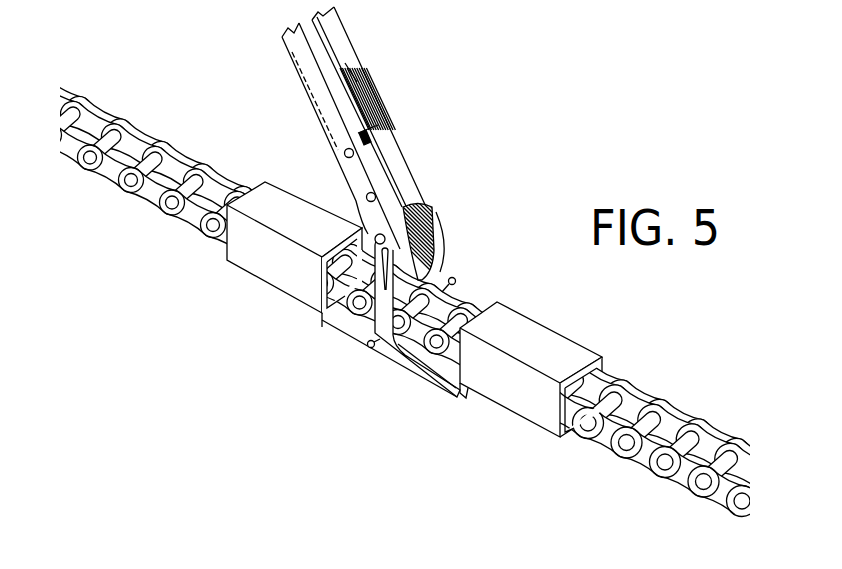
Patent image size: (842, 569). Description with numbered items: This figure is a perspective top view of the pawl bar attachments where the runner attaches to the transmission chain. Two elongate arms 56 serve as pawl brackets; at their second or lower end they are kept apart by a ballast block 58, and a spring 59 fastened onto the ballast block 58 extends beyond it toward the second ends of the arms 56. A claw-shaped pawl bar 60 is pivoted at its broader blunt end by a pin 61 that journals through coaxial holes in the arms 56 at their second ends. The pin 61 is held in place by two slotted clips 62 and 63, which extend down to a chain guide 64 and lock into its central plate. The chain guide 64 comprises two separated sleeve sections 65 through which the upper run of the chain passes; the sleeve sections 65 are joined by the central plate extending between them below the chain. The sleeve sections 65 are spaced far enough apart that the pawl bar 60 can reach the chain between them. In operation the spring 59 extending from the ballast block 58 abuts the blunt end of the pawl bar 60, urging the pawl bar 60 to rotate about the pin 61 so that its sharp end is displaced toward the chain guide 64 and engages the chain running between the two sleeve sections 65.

The elongate arm 56 is at (368, 96).
The ballast block 58 is at (388, 164).
The spring 59 is at (343, 178).
The pawl bar 60 is at (437, 247).
The pin 61 is at (433, 212).
The slotted clip 62 is at (457, 284).
The slotted clip 63 is at (368, 348).
The chain guide 64 is at (417, 383).
The sleeve section 65 is at (577, 338).